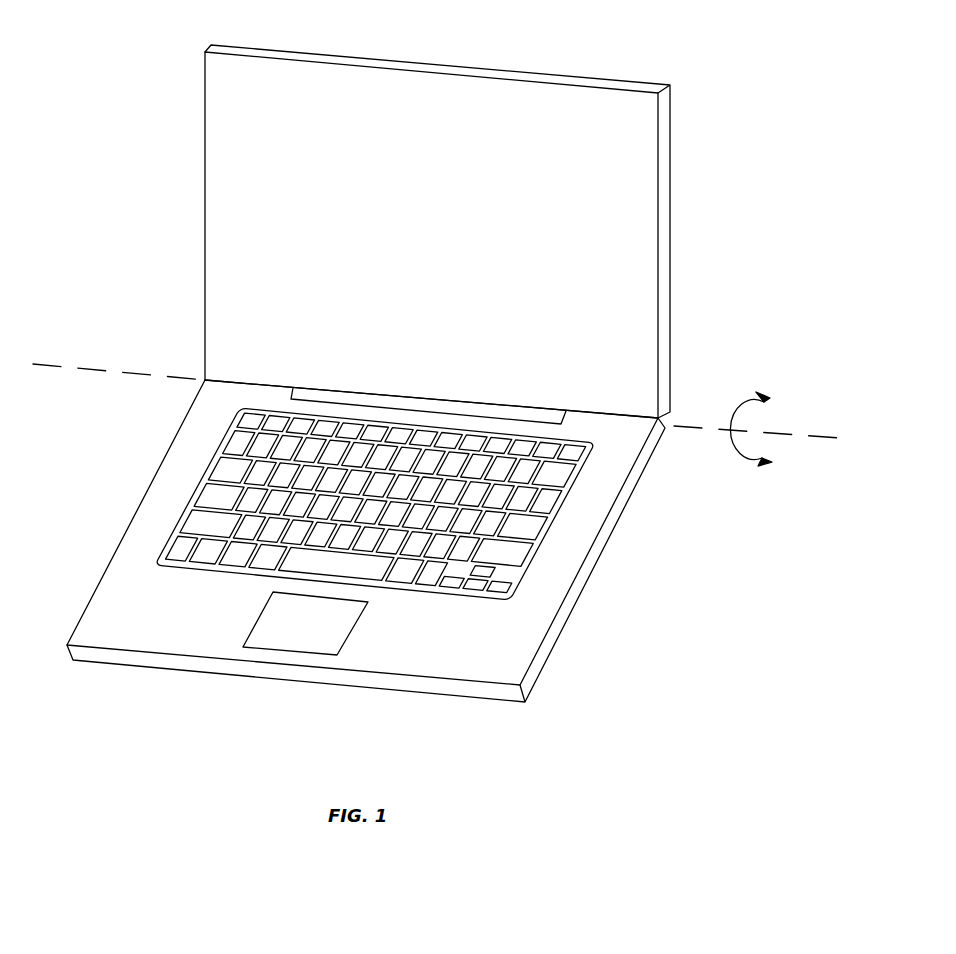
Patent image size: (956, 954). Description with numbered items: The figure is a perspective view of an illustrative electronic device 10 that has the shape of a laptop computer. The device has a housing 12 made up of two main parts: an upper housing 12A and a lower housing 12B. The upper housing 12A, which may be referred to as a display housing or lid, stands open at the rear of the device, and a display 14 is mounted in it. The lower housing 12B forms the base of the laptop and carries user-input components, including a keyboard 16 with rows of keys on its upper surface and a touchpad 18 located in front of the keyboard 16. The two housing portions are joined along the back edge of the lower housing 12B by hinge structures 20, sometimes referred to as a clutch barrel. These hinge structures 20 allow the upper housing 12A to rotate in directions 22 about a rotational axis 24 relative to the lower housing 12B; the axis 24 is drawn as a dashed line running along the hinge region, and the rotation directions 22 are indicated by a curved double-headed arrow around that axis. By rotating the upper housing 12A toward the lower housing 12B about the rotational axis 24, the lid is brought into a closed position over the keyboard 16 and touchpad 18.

The electronic device 10 is at (436, 370).
The housing 12 is at (393, 388).
The upper housing 12A is at (429, 231).
The lower housing 12B is at (372, 556).
The display 14 is at (578, 223).
The keyboard 16 is at (547, 532).
The touchpad 18 is at (313, 655).
The hinge structures 20 is at (530, 413).
The directions 22 is at (752, 462).
The rotational axis 24 is at (40, 365).